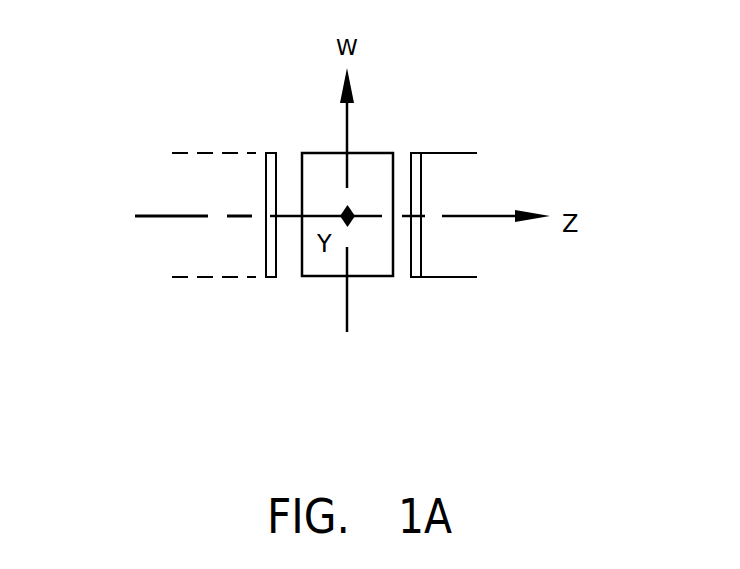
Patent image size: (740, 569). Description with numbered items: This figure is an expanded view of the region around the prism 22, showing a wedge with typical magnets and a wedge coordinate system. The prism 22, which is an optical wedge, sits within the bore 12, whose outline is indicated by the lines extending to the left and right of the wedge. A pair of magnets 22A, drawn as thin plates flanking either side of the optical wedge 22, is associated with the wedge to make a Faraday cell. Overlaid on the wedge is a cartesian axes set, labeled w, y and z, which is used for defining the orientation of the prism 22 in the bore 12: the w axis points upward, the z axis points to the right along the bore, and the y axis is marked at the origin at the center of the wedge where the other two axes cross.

The bore 12 is at (217, 183).
The prism 22 is at (362, 170).
The magnets 22A is at (268, 277).